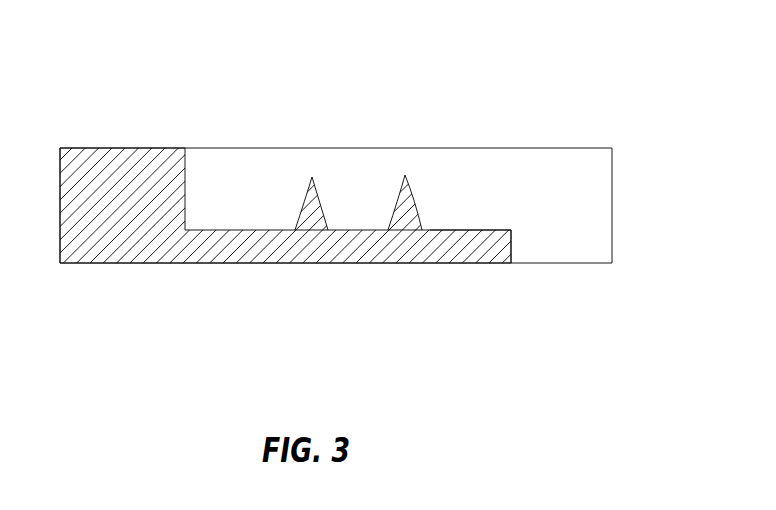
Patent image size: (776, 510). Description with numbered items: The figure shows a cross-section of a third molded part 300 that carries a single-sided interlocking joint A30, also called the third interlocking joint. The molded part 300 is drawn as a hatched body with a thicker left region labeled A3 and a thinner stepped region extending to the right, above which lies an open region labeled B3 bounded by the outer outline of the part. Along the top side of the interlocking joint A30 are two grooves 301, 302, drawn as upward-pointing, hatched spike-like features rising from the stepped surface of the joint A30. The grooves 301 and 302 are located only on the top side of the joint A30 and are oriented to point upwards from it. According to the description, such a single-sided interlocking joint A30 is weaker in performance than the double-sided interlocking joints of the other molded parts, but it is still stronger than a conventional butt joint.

The third molded part 300 is at (674, 83).
The first region (thick portion) A3 is at (118, 166).
The second region (recess) B3 is at (477, 148).
The groove 301 is at (306, 194).
The groove 302 is at (397, 198).
The single-sided interlocking joint A30 is at (504, 214).